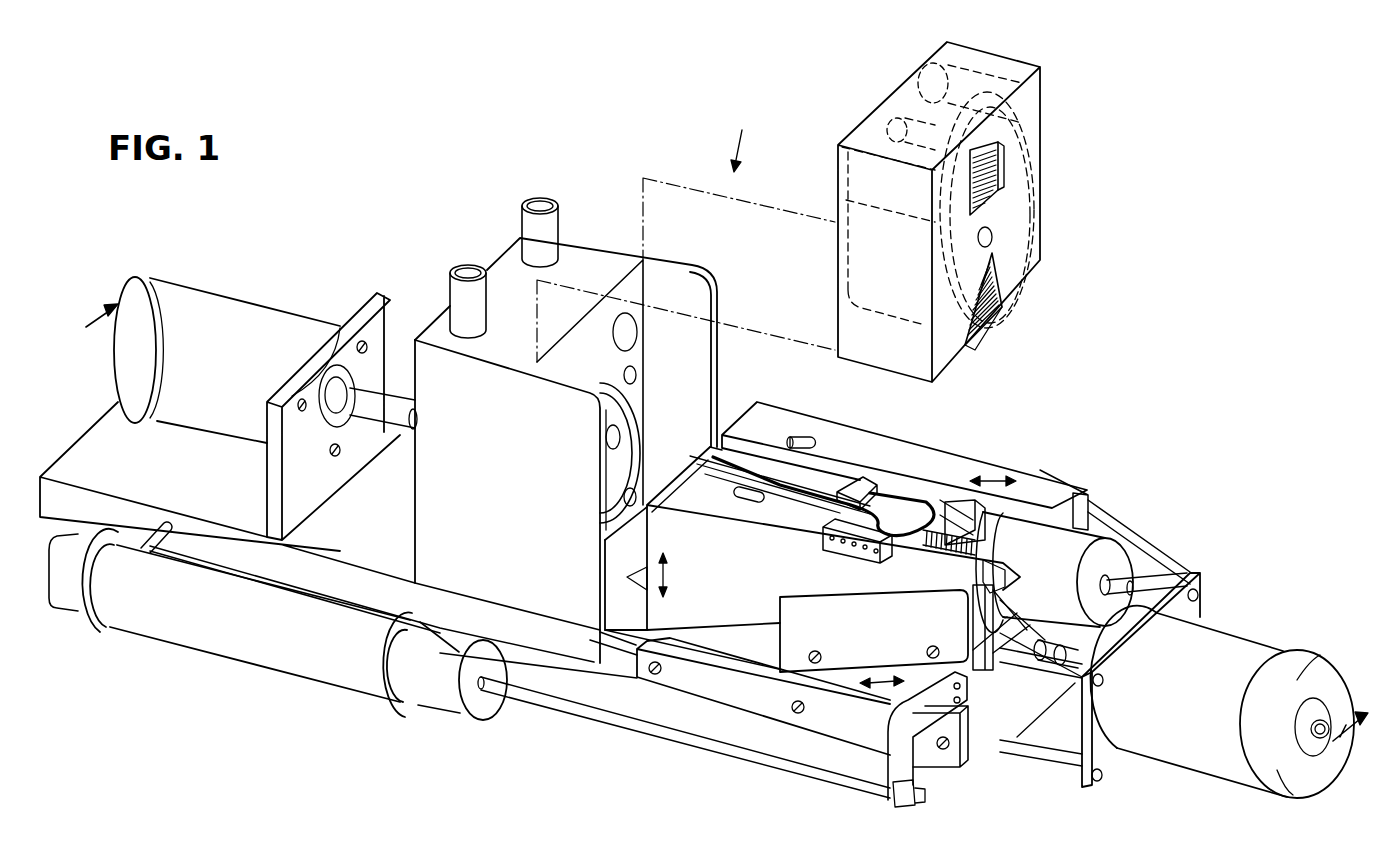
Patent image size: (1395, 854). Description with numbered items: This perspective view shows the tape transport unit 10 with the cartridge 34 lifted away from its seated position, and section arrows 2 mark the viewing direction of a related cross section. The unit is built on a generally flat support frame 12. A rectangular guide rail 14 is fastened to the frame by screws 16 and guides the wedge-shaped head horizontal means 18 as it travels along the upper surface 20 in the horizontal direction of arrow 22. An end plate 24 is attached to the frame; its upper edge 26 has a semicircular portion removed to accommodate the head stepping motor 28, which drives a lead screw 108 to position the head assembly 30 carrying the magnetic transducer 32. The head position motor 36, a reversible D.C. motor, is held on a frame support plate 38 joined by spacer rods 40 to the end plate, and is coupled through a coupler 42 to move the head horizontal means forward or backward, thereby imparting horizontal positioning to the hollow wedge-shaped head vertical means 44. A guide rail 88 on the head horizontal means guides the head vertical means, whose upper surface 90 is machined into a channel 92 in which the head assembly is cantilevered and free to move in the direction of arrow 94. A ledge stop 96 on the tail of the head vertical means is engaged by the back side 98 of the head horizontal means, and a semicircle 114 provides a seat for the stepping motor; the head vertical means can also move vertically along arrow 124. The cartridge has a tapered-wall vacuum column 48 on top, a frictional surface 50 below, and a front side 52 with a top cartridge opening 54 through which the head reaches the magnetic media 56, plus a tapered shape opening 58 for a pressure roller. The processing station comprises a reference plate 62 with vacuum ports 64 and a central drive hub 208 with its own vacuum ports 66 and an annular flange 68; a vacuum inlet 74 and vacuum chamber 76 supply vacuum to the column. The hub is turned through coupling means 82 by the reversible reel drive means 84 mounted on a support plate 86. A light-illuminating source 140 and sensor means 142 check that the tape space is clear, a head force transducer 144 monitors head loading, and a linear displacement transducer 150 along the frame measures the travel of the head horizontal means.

The section line 2- 2 is at (715, 541).
The tape transport unit 10 is at (745, 138).
The support frame 12 is at (100, 443).
The guide rail 14 is at (732, 697).
The screws 16 is at (652, 675).
The head horizontal means 18 is at (912, 678).
The upper surface 20 is at (618, 664).
The arrow 22 is at (882, 682).
The end plate 24 is at (984, 753).
The upper edge 26 is at (982, 640).
The head stepping motor 28 is at (1094, 541).
The head assembly 30 is at (904, 492).
The magnetic transducer 32 is at (703, 463).
The cartridge 34 is at (1008, 40).
The head position motor 36 is at (1197, 764).
The frame support plate 38 is at (1192, 613).
The spacer rods 40 is at (1155, 577).
The coupler 42 is at (1073, 653).
The head vertical means 44 is at (742, 612).
The tapered-wall vacuum column 48 is at (1017, 118).
The frictional surface 50 is at (982, 320).
The front side 52 is at (1032, 240).
The top cartridge opening 54 is at (1000, 162).
The magnetic media 56 is at (996, 182).
The tapered shape opening 58 is at (1002, 278).
The reference plate 62 is at (586, 346).
The vacuum ports 64 is at (638, 366).
The vacuum ports 66 is at (618, 435).
The annular flange 68 is at (630, 406).
The vacuum inlet 74 is at (524, 206).
The vacuum chamber 76 is at (630, 327).
The coupling means 82 is at (400, 425).
The reel drive means 84 is at (212, 300).
The support plate 86 is at (366, 310).
The guide rail 88 is at (870, 631).
The upper surface 90 is at (790, 531).
The channel 92 is at (930, 488).
The arrow 94 is at (996, 475).
The ledge stop 96 is at (1086, 507).
The back side 98 is at (1068, 603).
The lead screw 108 is at (960, 547).
The semicircle 114 is at (1006, 576).
The arrow 124 is at (687, 575).
The light-illuminating source 140 is at (741, 490).
The sensor means 142 is at (797, 436).
The head force transducer 144 is at (858, 480).
The linear displacement transducer 150 is at (248, 652).
The drive hub 208 is at (608, 470).